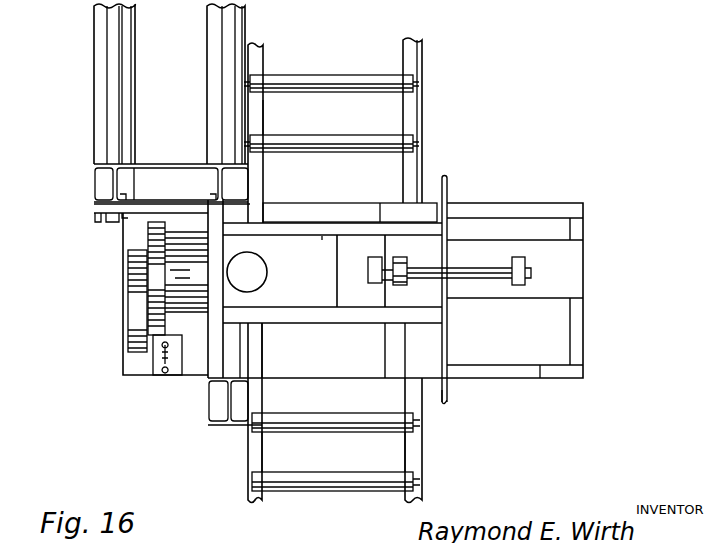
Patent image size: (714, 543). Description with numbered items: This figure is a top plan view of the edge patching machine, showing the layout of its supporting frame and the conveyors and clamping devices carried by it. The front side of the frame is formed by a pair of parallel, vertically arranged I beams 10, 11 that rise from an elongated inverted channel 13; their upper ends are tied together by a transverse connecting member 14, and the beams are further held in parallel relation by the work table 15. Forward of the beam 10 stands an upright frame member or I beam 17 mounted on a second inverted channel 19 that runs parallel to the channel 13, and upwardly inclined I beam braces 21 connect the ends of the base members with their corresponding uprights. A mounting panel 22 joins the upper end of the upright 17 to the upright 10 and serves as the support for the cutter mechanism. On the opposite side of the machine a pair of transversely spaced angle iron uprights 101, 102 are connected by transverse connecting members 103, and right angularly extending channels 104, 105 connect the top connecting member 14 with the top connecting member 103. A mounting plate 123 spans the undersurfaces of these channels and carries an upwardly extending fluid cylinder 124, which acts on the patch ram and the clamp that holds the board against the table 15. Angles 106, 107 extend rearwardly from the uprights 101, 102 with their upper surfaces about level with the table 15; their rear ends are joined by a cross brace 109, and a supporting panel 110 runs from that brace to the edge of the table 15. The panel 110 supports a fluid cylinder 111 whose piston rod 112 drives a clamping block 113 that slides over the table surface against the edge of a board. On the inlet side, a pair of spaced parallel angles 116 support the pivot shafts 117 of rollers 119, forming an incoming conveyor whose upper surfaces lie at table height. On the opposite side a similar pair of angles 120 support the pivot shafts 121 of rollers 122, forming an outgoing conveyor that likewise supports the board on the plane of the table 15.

The I beam 10 is at (215, 172).
The I beam 11 is at (222, 390).
The inverted channel 13 is at (232, 350).
The transverse connecting member 14 is at (213, 363).
The table 15 is at (302, 350).
The upright frame member 17 is at (100, 181).
The inverted channel 19 is at (37, 101).
The I beam brace 21 is at (110, 58).
The mounting panel 22 is at (110, 206).
The angle iron upright 101 is at (449, 186).
The angle iron upright 102 is at (448, 396).
The transverse connecting member 103 is at (438, 333).
The channel 104 is at (305, 227).
The channel 105 is at (325, 316).
The angle 106 is at (513, 207).
The angle 107 is at (540, 370).
The cross brace 109 is at (578, 304).
The supporting panel 110 is at (566, 263).
The fluid cylinder 111 is at (462, 268).
The piston rod 112 is at (385, 283).
The clamping block 113 is at (372, 268).
The angles 116 is at (257, 113).
The pivot shafts 117 is at (252, 80).
The rollers 119 is at (344, 83).
The angles 120 is at (258, 448).
The pivot shafts 121 is at (252, 480).
The rollers 122 is at (308, 423).
The mounting plate 123 is at (322, 237).
The fluid cylinder 124 is at (260, 257).